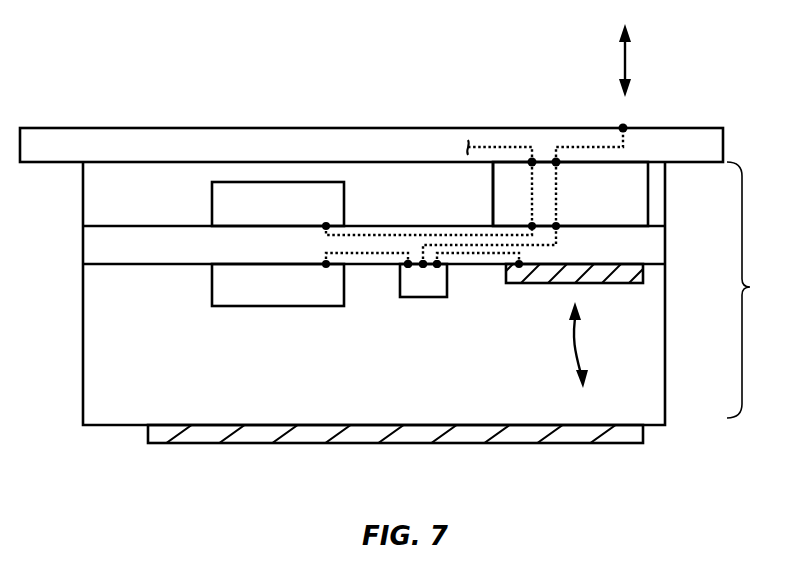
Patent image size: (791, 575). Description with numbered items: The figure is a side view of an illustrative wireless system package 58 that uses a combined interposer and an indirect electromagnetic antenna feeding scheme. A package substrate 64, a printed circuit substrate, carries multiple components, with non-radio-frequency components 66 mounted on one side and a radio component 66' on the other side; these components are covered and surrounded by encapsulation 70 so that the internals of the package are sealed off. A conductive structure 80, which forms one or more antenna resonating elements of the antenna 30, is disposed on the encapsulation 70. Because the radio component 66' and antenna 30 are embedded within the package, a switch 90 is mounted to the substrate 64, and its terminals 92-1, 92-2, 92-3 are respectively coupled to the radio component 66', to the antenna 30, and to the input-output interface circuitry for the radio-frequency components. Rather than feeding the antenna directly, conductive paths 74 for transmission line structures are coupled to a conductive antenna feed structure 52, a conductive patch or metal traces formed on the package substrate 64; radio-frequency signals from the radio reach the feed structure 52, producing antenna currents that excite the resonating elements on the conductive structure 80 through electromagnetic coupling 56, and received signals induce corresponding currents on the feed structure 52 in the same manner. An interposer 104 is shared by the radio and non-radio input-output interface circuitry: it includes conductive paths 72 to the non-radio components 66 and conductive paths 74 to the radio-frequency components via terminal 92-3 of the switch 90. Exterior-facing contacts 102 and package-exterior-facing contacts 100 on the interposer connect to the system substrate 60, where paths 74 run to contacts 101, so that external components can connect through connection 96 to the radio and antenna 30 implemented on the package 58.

The antenna 30 is at (634, 446).
The antenna feed structure 52 is at (632, 283).
The electromagnetic coupling 56 is at (582, 357).
The system package 58 is at (754, 290).
The system substrate 60 is at (267, 128).
The package substrate 64 is at (86, 241).
The components 66 is at (249, 204).
The radio component 66' is at (247, 285).
The encapsulation 70 is at (86, 194).
The conductive paths 72 is at (530, 178).
The conductive paths 74 is at (557, 178).
The conductive structure 80 is at (377, 433).
The switch 90 is at (433, 290).
The terminal 92-1 is at (407, 268).
The terminal 92-2 is at (438, 268).
The terminal 92-3 is at (423, 268).
The connection 96 is at (626, 58).
The contacts 100 is at (557, 160).
The contacts 101 is at (624, 126).
The contacts 102 is at (531, 160).
The interposer 104 is at (493, 205).